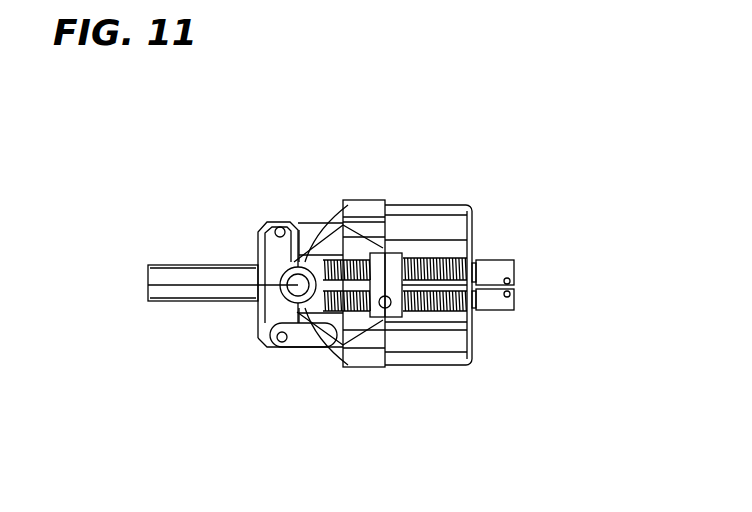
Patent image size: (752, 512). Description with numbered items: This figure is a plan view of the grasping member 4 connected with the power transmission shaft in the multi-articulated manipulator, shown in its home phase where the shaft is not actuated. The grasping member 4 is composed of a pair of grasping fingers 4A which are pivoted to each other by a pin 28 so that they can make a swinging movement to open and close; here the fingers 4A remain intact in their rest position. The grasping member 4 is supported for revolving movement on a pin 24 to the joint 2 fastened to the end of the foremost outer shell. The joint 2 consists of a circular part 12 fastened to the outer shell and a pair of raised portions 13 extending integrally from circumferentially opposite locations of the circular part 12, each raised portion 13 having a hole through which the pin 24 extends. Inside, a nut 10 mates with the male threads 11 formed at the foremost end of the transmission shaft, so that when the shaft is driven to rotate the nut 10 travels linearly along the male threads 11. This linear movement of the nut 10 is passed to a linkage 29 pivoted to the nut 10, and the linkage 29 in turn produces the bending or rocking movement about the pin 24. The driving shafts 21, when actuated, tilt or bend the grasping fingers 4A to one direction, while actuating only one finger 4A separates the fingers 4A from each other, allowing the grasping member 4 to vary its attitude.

The joint 2 is at (392, 187).
The grasping member 4 is at (168, 266).
The grasping fingers 4A is at (202, 270).
The nut 10 is at (395, 250).
The male threads 11 is at (440, 262).
The circular part 12 is at (367, 203).
The raised portions 13 is at (337, 218).
The driving shafts 21 is at (500, 265).
The pin 24 is at (295, 287).
The pin 28 is at (280, 222).
The linkage 29 is at (315, 222).